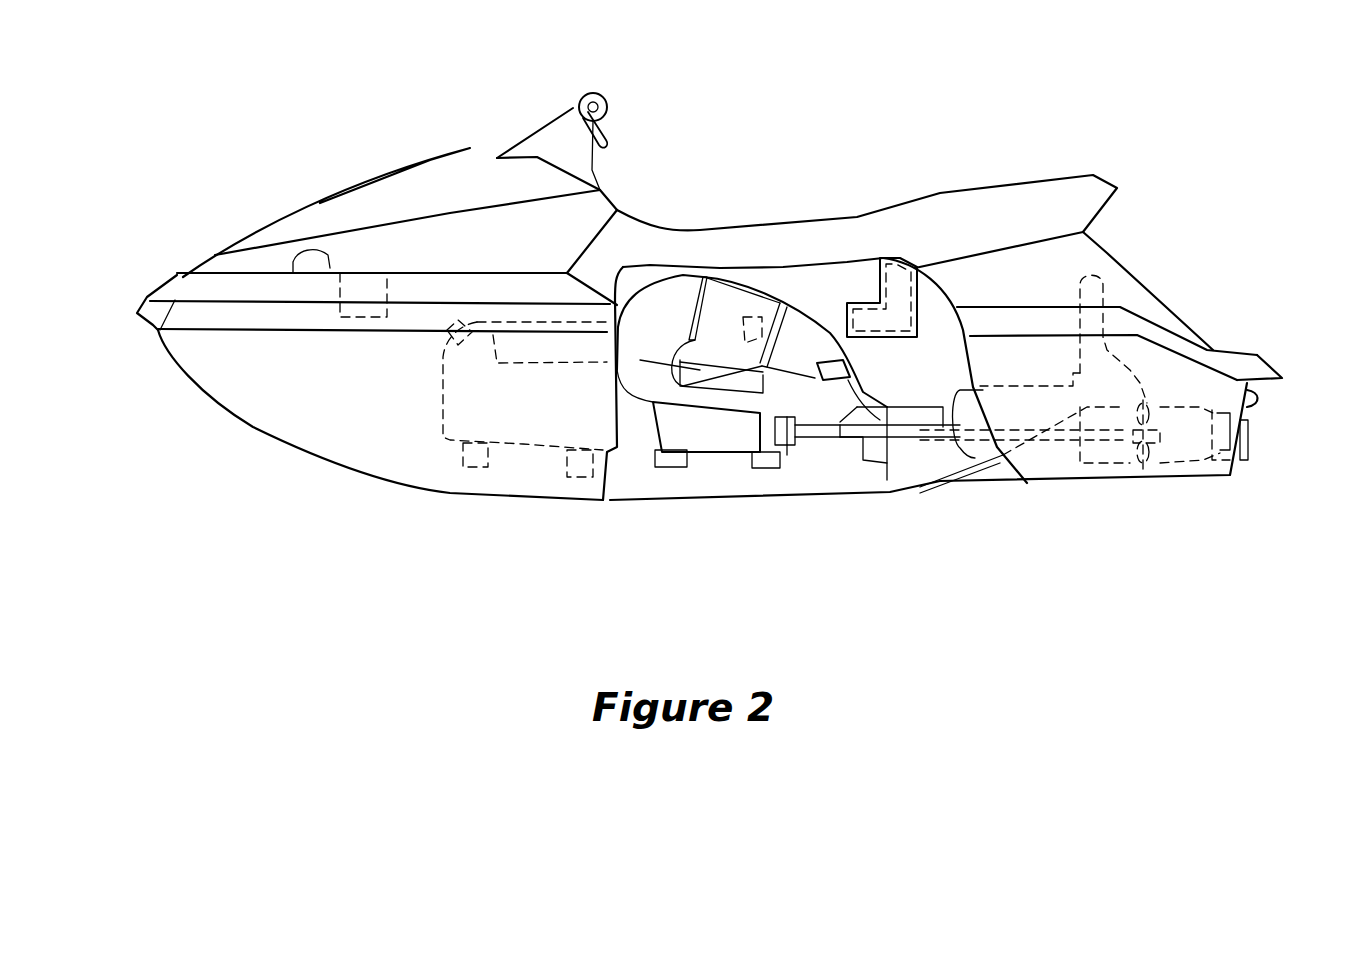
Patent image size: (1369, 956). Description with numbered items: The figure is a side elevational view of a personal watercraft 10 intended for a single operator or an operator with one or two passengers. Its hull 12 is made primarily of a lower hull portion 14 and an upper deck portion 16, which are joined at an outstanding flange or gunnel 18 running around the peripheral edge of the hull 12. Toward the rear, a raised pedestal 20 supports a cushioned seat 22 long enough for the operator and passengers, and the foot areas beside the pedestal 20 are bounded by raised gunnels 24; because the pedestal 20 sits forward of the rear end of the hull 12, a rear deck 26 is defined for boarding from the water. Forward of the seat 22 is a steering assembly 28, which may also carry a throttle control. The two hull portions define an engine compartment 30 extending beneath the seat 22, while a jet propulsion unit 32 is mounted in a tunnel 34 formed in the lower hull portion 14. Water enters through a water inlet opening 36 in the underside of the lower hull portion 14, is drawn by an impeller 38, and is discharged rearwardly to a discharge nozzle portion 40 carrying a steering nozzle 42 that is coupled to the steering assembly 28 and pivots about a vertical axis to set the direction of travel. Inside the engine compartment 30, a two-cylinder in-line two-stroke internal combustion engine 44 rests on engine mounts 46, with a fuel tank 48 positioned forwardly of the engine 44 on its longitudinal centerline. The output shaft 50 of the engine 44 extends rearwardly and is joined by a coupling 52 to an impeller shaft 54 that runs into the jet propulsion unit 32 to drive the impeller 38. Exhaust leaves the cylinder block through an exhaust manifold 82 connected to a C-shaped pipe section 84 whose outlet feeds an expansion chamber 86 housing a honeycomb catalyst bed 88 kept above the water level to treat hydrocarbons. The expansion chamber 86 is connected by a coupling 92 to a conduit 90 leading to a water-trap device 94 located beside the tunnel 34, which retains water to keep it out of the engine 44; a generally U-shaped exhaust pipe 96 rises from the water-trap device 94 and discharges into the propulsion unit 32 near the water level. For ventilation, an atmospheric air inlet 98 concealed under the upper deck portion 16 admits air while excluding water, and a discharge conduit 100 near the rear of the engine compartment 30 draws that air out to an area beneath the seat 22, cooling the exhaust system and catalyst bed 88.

The watercraft 10 is at (1128, 148).
The hull 12 is at (172, 276).
The lower hull portion 14 is at (287, 417).
The upper deck portion 16 is at (287, 220).
The gunnel 18 is at (160, 335).
The raised pedestal 20 is at (1148, 310).
The cushioned seat 22 is at (863, 213).
The raised gunnels 24 is at (1150, 333).
The rear deck 26 is at (1247, 353).
The steering assembly 28 is at (608, 122).
The engine compartment 30 is at (627, 480).
The jet propulsion unit 32 is at (1105, 495).
The tunnel 34 is at (1165, 487).
The water inlet opening 36 is at (1008, 478).
The impeller 38 is at (1143, 487).
The discharge nozzle portion 40 is at (1213, 462).
The steering nozzle 42 is at (1250, 437).
The internal combustion engine 44 is at (742, 460).
The engine mounts 46 is at (668, 470).
The fuel tank 48 is at (525, 447).
The output shaft 50 is at (770, 408).
The coupling 52 is at (787, 440).
The impeller shaft 54 is at (838, 465).
The exhaust manifold 82 is at (648, 368).
The C-shaped pipe section 84 is at (672, 307).
The expansion chamber 86 is at (755, 310).
The catalyst bed 88 is at (747, 313).
The conduit 90 is at (860, 403).
The coupling 92 is at (845, 362).
The water-trap device 94 is at (965, 482).
The exhaust pipe 96 is at (1093, 292).
The atmospheric air inlet 98 is at (340, 293).
The discharge conduit 100 is at (872, 274).